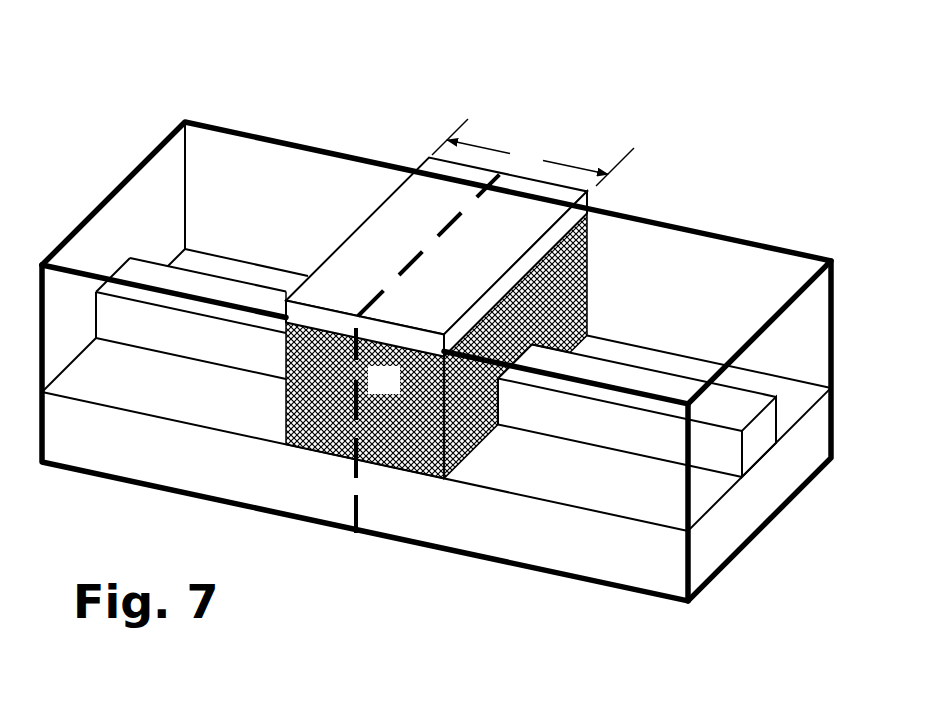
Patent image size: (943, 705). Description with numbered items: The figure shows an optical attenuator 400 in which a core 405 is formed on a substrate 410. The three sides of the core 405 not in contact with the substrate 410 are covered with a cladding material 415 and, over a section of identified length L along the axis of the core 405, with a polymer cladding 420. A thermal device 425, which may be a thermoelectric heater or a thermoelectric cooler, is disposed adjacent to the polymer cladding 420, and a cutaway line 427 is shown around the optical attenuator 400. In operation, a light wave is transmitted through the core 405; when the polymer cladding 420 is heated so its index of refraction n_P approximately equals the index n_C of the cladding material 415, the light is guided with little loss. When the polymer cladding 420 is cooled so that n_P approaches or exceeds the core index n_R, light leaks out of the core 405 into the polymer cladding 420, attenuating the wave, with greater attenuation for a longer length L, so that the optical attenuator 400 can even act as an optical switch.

The optical attenuator 400 is at (697, 90).
The core 405 is at (753, 438).
The substrate 410 is at (480, 530).
The cladding material 415 is at (247, 172).
The polymer cladding 420 is at (316, 407).
The thermal device 425 is at (398, 224).
The cutaway line 427 is at (357, 495).